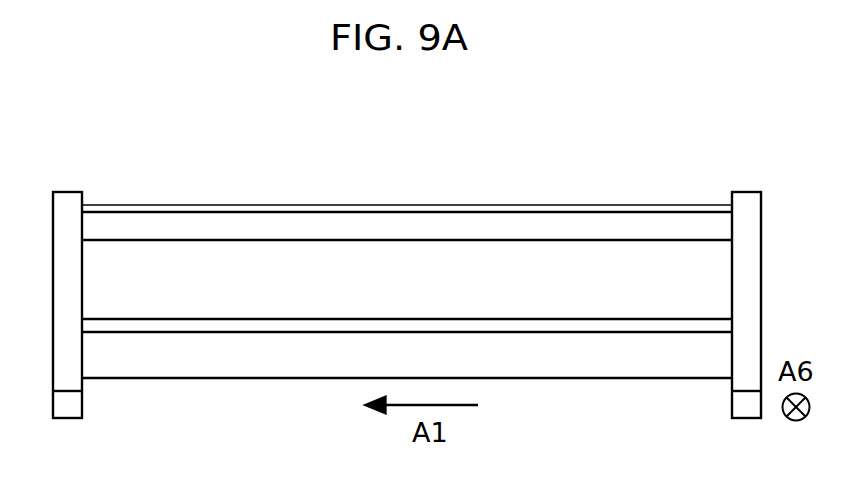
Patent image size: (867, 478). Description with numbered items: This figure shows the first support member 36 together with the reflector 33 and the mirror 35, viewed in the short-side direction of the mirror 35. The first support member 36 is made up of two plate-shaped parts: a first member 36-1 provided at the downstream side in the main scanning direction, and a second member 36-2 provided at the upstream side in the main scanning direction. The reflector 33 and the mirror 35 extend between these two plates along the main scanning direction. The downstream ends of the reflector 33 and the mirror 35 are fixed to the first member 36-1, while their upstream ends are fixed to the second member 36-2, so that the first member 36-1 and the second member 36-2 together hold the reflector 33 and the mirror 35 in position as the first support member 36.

The reflector 33 is at (562, 203).
The mirror 35 is at (420, 318).
The first support member 36 is at (434, 268).
The first member 36-1 is at (103, 175).
The second member 36-2 is at (785, 175).